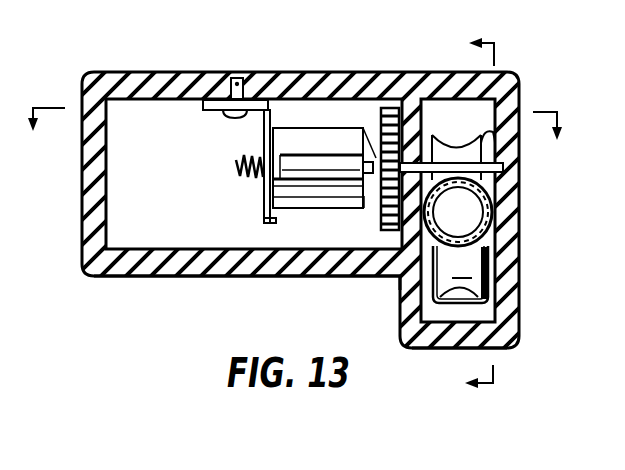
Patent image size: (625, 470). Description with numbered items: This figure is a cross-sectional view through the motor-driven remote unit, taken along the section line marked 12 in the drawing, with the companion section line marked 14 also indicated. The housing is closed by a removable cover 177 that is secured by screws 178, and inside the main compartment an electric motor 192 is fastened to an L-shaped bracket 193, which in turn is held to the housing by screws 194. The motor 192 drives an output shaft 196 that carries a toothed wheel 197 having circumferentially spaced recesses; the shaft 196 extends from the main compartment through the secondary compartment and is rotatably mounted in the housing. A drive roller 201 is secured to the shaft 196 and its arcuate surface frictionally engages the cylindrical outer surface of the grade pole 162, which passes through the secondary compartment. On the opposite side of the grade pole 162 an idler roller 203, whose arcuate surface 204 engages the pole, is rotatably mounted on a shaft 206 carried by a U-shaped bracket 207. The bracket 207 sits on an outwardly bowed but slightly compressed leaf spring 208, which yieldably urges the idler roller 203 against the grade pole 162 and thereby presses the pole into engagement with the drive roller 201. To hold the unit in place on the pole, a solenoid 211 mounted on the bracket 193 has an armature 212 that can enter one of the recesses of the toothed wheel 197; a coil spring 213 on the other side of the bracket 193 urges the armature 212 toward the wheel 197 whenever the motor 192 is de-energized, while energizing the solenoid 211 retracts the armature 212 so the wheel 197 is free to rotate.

The section line 12- 12 is at (299, 137).
The section line 14- 14 is at (486, 216).
The grade pole 162 is at (494, 215).
The removable cover 177 is at (137, 73).
The screws 178 is at (86, 257).
The electric motor 192 is at (307, 133).
The L-shaped bracket 193 is at (264, 210).
The screws 194 is at (232, 110).
The output shaft 196 is at (515, 175).
The toothed wheel 197 is at (380, 128).
The drive roller 201 is at (513, 135).
The idler roller 203 is at (486, 285).
The arcuate surface 204 is at (405, 283).
The shaft 206 is at (488, 262).
The U-shaped bracket 207 is at (472, 298).
The leaf spring 208 is at (512, 340).
The solenoid 211 is at (300, 180).
The armature 212 is at (373, 207).
The coil spring 213 is at (236, 177).